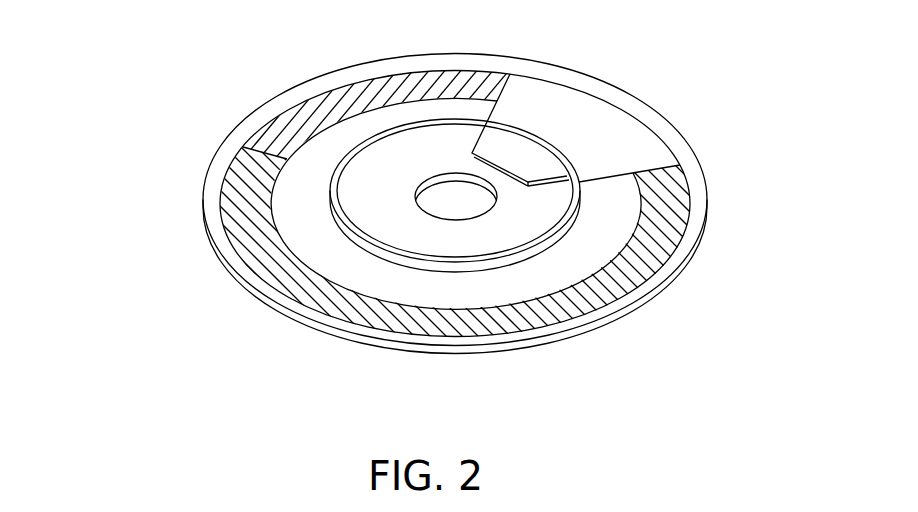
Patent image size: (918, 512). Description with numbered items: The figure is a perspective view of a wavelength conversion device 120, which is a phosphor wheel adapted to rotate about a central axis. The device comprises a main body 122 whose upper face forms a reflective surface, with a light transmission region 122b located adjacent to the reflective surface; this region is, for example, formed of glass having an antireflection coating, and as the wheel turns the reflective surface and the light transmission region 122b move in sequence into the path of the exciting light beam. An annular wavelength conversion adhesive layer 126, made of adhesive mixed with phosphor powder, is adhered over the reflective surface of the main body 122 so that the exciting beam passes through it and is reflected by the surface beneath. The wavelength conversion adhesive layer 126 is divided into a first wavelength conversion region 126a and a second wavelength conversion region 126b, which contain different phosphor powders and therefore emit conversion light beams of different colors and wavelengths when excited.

The wavelength conversion device 120 is at (438, 206).
The main body 122 is at (425, 188).
The light transmission region 122b is at (601, 125).
The wavelength conversion adhesive layer 126 is at (438, 193).
The first wavelength conversion region 126a is at (341, 100).
The second wavelength conversion region 126b is at (351, 303).